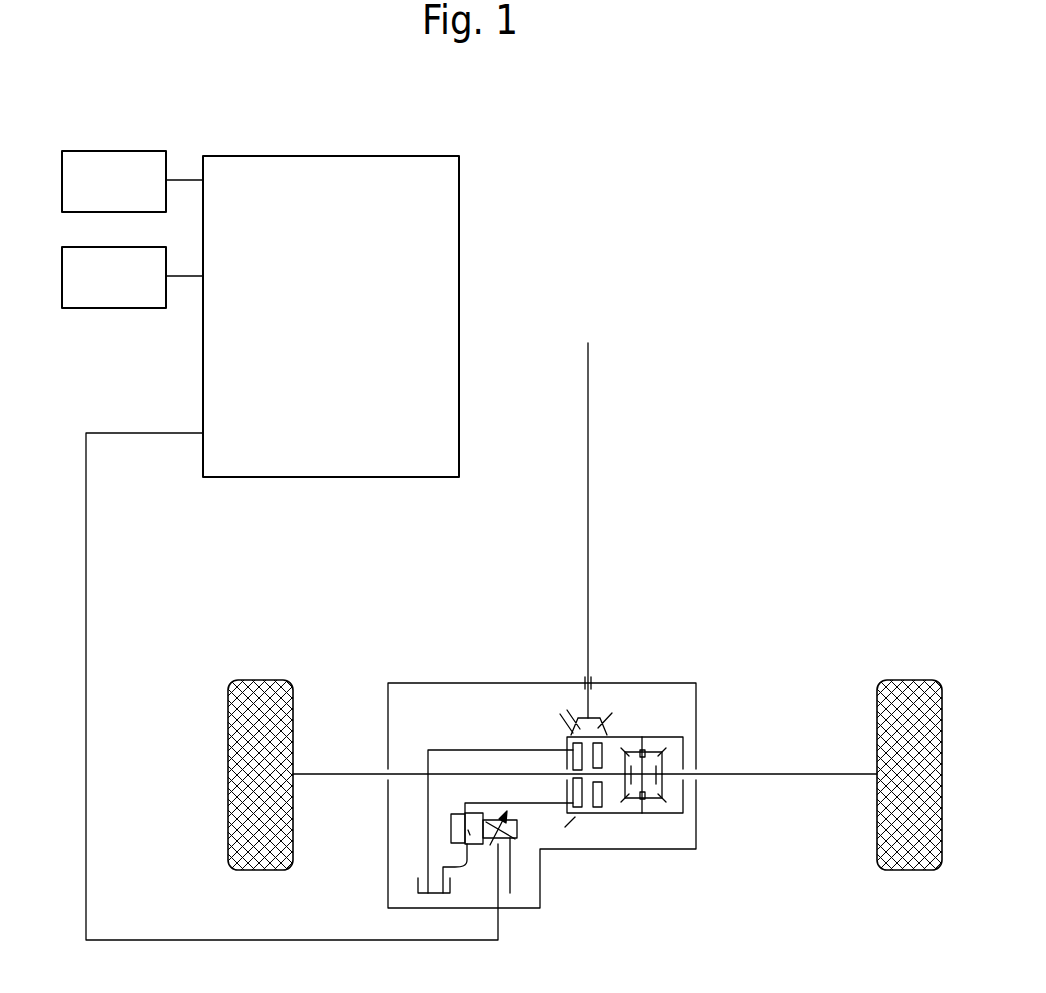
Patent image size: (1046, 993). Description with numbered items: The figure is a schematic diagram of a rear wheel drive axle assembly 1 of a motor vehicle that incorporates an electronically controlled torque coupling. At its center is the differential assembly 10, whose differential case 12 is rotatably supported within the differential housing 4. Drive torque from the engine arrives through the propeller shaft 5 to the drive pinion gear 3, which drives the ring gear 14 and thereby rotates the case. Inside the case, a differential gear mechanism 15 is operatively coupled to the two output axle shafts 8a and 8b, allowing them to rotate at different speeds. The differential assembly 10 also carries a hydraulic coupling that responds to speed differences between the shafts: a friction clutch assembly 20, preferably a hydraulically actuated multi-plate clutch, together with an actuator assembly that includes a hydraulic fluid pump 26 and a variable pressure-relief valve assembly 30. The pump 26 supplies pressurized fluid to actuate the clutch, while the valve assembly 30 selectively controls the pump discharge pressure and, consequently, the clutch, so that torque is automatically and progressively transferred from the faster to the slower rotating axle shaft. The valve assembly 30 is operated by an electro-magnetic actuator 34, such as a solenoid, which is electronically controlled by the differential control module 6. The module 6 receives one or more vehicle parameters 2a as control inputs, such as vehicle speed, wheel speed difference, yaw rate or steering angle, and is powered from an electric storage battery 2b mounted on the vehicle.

The rear wheel drive axle assembly 1 is at (711, 627).
The vehicle parameters 2a is at (113, 308).
The electric storage battery 2b is at (115, 151).
The drive pinion gear 3 is at (585, 716).
The differential housing 4 is at (413, 683).
The propeller shaft 5 is at (588, 393).
The differential control module 6 is at (333, 156).
The output axle shaft 8a is at (345, 770).
The output axle shaft 8b is at (790, 772).
The differential assembly 10 is at (636, 712).
The differential case 12 is at (663, 737).
The ring gear 14 is at (567, 738).
The differential gear mechanism 15 is at (658, 814).
The friction clutch assembly 20 is at (598, 800).
The hydraulic fluid pump 26 is at (580, 800).
The variable pressure-relief valve assembly 30 is at (483, 845).
The electro-magnetic actuator 34 is at (510, 893).